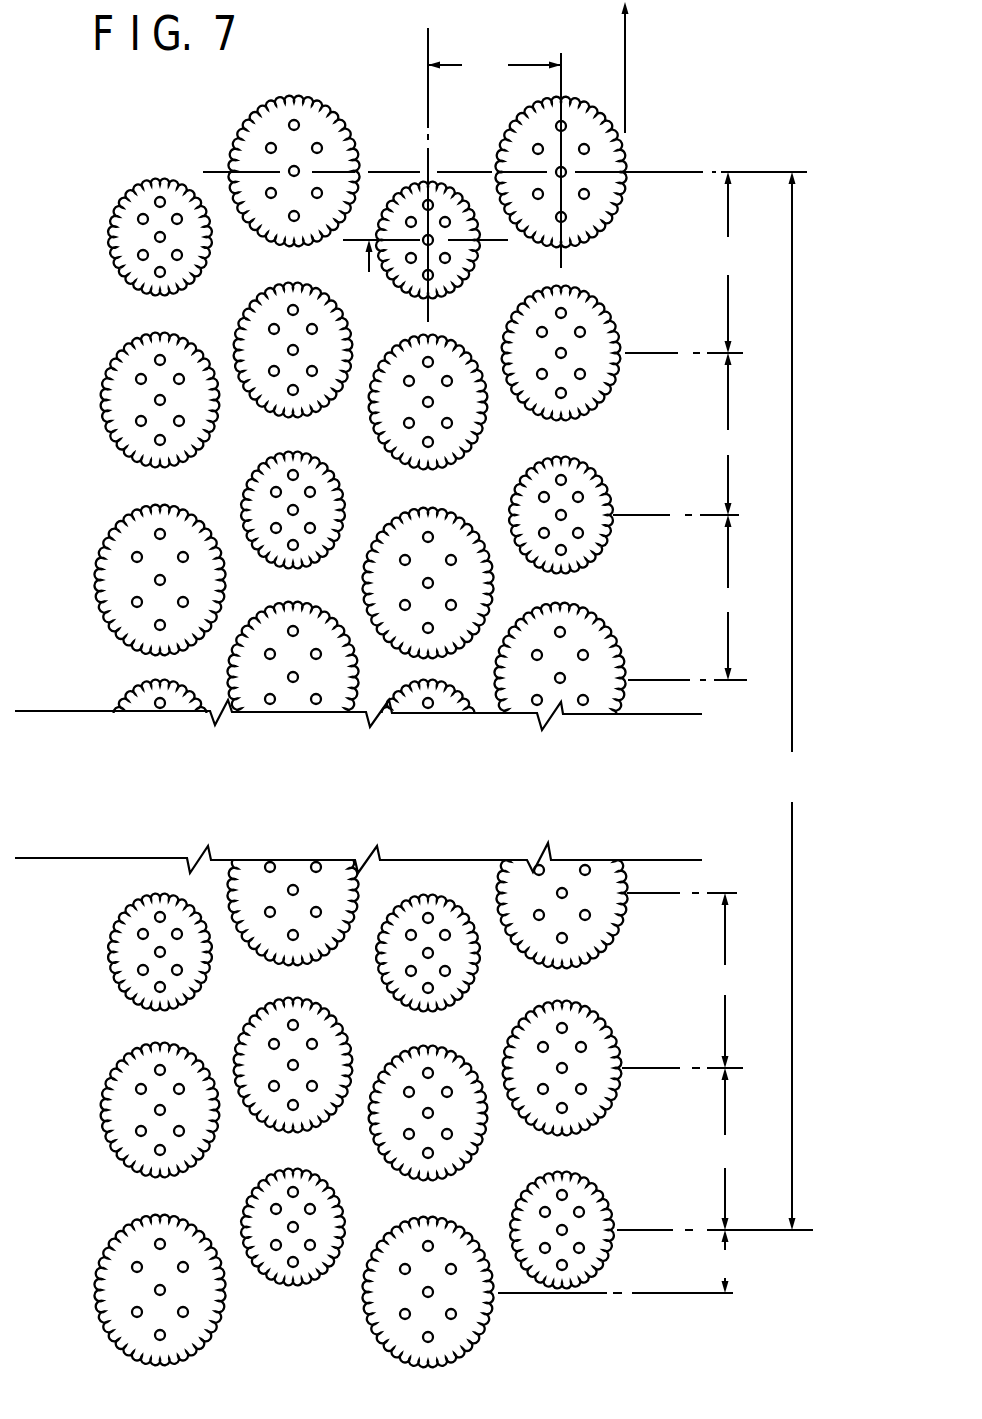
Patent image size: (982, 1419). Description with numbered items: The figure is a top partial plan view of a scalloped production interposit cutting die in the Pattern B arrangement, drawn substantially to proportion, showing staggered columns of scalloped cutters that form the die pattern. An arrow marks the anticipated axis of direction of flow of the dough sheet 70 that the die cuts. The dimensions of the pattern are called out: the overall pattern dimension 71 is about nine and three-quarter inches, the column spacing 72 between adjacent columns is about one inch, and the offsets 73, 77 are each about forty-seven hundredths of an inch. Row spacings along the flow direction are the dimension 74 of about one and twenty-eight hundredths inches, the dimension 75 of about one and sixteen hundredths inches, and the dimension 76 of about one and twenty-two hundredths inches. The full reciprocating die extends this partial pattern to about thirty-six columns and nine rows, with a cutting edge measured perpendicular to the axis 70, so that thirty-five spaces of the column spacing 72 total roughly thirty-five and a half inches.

The axis of direction of flow of the dough sheet 70 is at (627, 76).
The pattern dimension 71 is at (791, 701).
The column spacing dimension 72 is at (494, 175).
The offset dimension 73 is at (369, 160).
The row spacing dimension 74 is at (729, 620).
The row spacing dimension 75 is at (729, 791).
The row spacing dimension 76 is at (739, 597).
The offset dimension 77 is at (727, 1261).